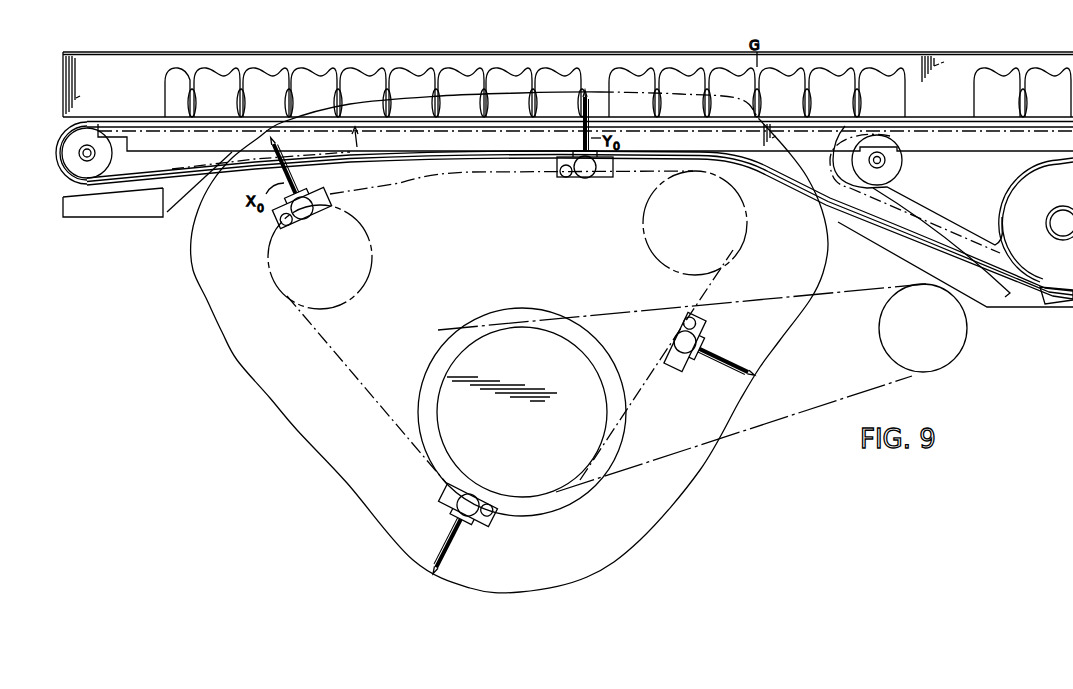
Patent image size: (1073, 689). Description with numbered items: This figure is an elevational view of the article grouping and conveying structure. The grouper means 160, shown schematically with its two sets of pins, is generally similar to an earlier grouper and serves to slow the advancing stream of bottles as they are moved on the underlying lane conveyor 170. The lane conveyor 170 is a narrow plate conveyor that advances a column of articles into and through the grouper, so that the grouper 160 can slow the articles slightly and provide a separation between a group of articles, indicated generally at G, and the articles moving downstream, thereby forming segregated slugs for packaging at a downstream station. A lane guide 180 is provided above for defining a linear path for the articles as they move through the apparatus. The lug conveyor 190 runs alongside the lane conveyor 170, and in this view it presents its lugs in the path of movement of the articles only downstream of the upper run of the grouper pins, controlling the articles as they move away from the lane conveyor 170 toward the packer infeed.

The grouper means 160 is at (258, 401).
The lane conveyor 170 is at (143, 120).
The lane guide 180 is at (961, 67).
The lug conveyor 190 is at (953, 120).